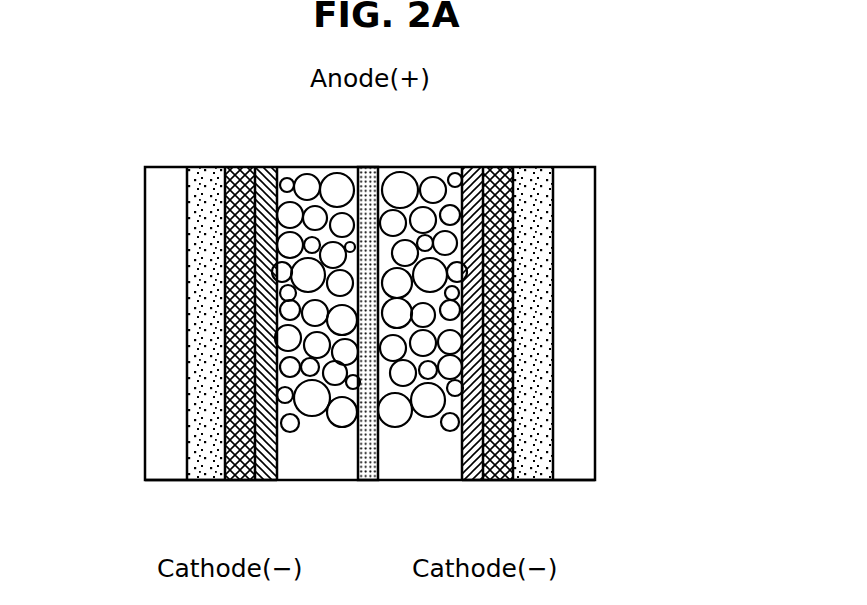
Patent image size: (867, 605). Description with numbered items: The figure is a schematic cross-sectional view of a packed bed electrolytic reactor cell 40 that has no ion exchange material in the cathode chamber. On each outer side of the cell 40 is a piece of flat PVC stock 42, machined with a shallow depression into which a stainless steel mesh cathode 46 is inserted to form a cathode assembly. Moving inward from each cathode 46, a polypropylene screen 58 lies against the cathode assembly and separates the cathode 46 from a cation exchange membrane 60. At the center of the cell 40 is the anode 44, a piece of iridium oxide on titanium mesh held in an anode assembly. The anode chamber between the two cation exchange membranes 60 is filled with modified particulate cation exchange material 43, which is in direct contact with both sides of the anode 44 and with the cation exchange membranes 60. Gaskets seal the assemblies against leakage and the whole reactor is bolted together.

The cell 40 is at (634, 214).
The flat PVC stock 42 is at (173, 428).
The modified particulate cation exchange material 43 is at (308, 167).
The anode 44 is at (369, 167).
The cathodes 46 is at (208, 480).
The polypropylene screen 58 is at (239, 167).
The cation exchange membranes 60 is at (267, 480).